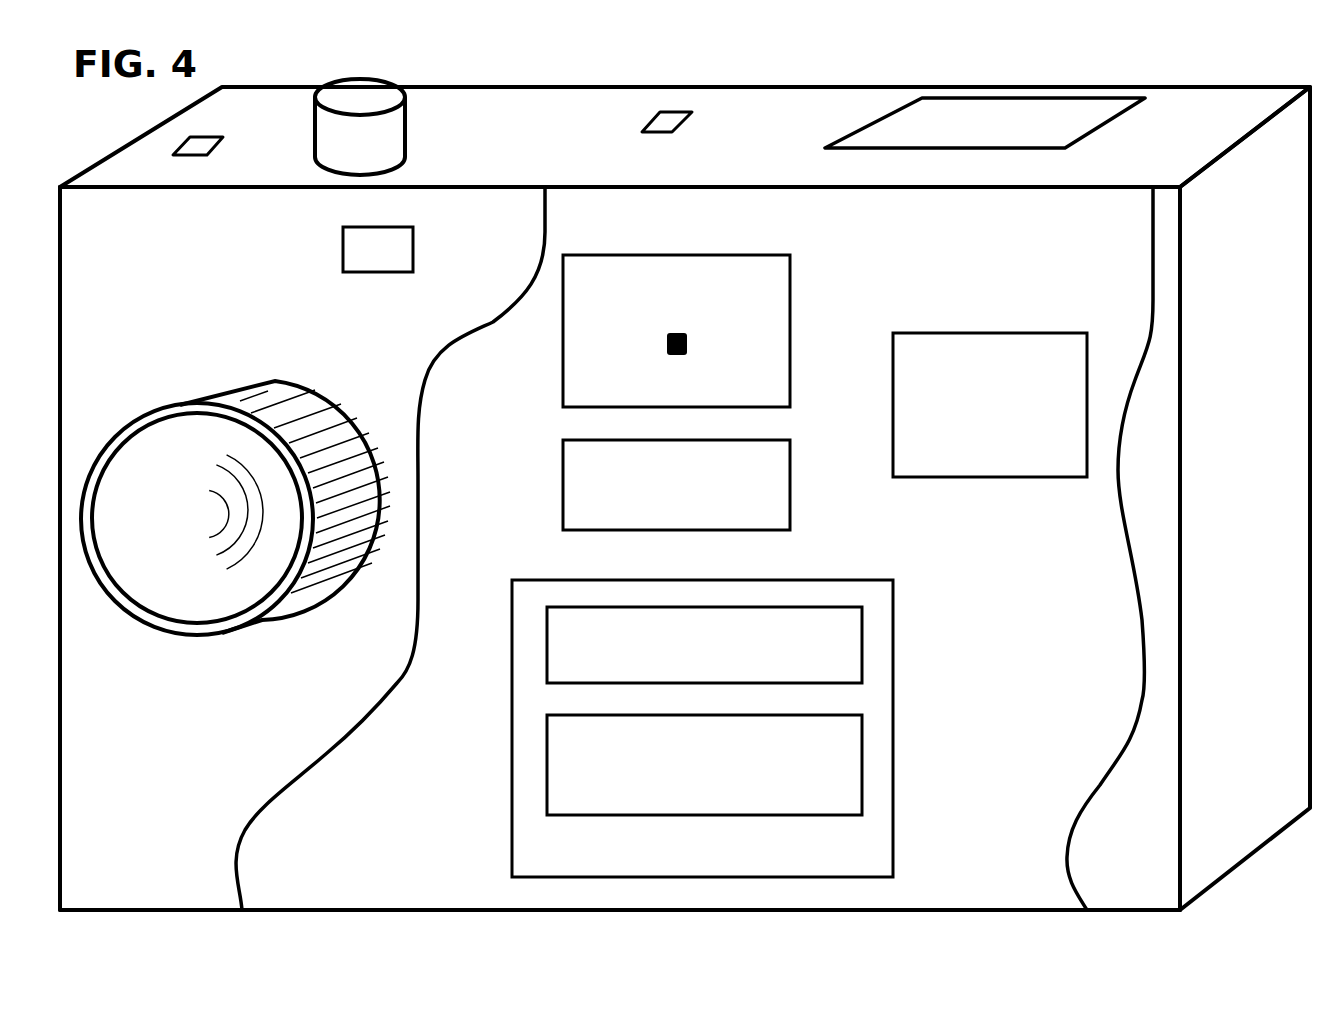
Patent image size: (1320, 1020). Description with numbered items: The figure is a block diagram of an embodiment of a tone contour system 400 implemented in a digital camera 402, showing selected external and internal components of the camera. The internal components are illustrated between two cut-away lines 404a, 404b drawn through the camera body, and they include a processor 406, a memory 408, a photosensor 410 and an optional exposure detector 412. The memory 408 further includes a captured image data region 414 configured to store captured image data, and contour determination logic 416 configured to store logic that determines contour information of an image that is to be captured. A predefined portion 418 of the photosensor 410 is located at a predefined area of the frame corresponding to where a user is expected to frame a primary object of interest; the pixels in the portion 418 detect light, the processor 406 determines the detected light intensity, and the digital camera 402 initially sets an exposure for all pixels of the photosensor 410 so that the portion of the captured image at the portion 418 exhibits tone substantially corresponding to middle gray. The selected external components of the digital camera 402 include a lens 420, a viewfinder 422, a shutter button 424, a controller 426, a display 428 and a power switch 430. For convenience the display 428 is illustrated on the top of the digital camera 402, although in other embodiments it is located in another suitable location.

The tone contour system 400 is at (116, 281).
The digital camera 402 is at (130, 882).
The cut-away line 404a is at (528, 305).
The cut-away line 404b is at (1078, 828).
The processor 406 is at (1070, 464).
The memory 408 is at (882, 864).
The photosensor 410 is at (778, 396).
The exposure detector 412 is at (777, 517).
The captured image data region 414 is at (847, 671).
The contour determination logic 416 is at (848, 804).
The predefined portion 418 is at (667, 340).
The lens 420 is at (253, 377).
The viewfinder 422 is at (382, 273).
The shutter button 424 is at (407, 115).
The controller 426 is at (688, 120).
The display 428 is at (955, 150).
The power switch 430 is at (214, 145).